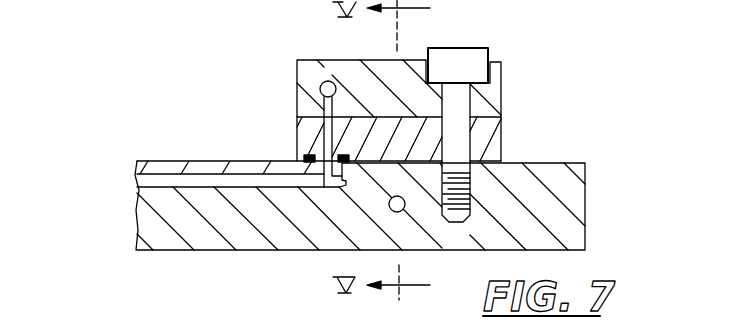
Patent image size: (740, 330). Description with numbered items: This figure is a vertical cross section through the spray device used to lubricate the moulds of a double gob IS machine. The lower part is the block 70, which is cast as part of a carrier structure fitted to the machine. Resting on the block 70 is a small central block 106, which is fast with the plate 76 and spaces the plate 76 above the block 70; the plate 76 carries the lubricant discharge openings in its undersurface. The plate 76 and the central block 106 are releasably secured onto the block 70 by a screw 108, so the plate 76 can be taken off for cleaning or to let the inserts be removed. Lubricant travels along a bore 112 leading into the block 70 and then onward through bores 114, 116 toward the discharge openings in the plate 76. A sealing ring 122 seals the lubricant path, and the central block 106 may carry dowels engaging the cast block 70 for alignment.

The block 70 is at (578, 173).
The plate 76 is at (494, 103).
The small central block 106 is at (480, 133).
The screw 108 is at (474, 72).
The bore 112 is at (252, 181).
The bore 114 is at (327, 121).
The bore 116 is at (321, 90).
The sealing ring 122 is at (344, 155).